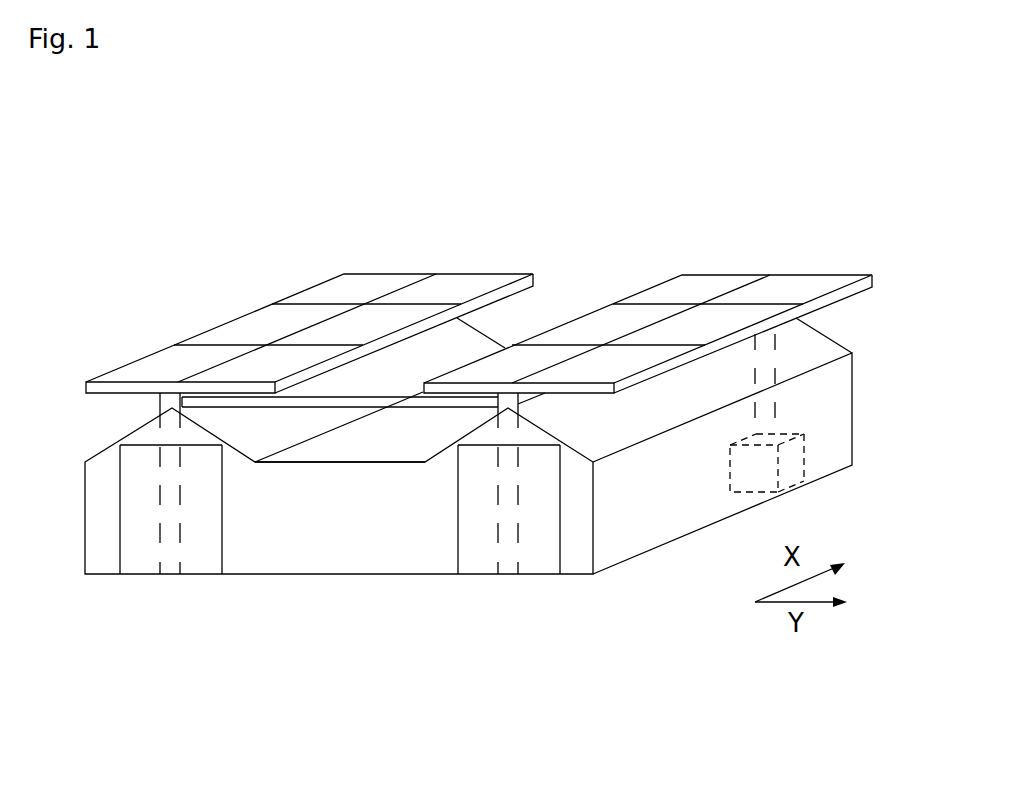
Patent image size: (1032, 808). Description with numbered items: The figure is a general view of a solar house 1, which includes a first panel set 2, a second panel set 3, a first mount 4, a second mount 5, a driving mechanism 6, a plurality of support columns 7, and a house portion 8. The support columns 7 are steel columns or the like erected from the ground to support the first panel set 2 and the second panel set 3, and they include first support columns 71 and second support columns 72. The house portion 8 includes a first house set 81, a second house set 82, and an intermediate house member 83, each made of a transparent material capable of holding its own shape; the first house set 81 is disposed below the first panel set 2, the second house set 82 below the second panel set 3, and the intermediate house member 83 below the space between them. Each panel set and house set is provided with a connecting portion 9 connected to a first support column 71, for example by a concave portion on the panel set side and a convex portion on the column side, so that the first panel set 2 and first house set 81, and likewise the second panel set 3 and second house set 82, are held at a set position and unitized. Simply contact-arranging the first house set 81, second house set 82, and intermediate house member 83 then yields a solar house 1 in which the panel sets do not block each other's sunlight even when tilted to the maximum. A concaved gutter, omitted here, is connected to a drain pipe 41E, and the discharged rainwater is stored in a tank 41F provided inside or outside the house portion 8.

The solar house 1 is at (630, 188).
The first panel set 2 is at (475, 275).
The second panel set 3 is at (818, 275).
The first mount 4 is at (95, 396).
The second mount 5 is at (852, 297).
The driving mechanism 6 is at (243, 402).
The support columns 7 is at (333, 564).
The first support column 71 is at (170, 575).
The second support column 72 is at (85, 577).
The house portion 8 is at (321, 583).
The first house set 81 is at (130, 590).
The second house set 82 is at (465, 592).
The intermediate house member 83 is at (342, 468).
The connecting portion 9 is at (172, 410).
The drain pipe 41E is at (773, 407).
The tank 41F is at (793, 477).